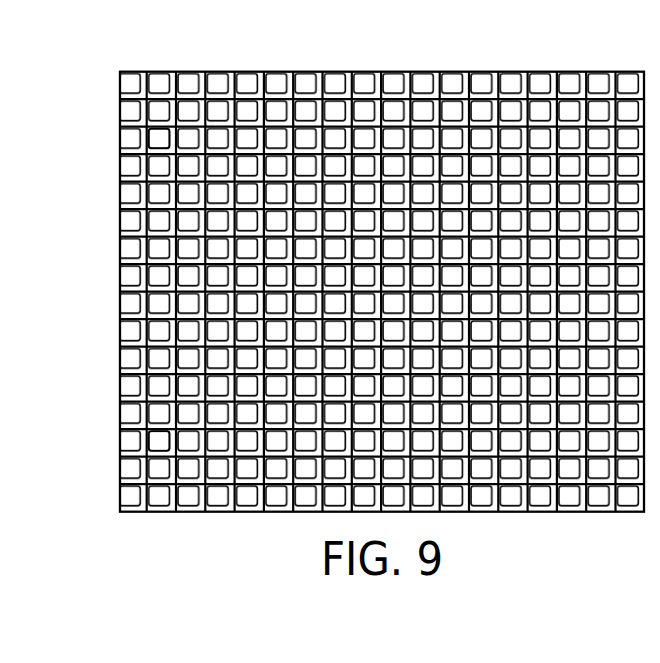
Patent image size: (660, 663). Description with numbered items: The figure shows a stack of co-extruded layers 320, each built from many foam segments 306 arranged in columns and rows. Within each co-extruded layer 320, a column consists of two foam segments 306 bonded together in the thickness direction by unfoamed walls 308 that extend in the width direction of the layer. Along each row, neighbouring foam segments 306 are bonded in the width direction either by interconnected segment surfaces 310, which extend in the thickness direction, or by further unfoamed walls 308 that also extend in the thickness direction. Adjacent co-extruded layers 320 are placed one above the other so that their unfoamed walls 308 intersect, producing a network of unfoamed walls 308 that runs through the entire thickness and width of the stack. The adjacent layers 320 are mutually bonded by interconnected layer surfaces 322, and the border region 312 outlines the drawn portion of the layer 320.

The horizontal grid lines 306 is at (188, 82).
The vertical grid lines 308 is at (254, 94).
The pixel cell 310 is at (175, 141).
The array border 312 is at (130, 126).
The bottom row of cells 320 is at (115, 457).
The cell in row 322 is at (160, 458).